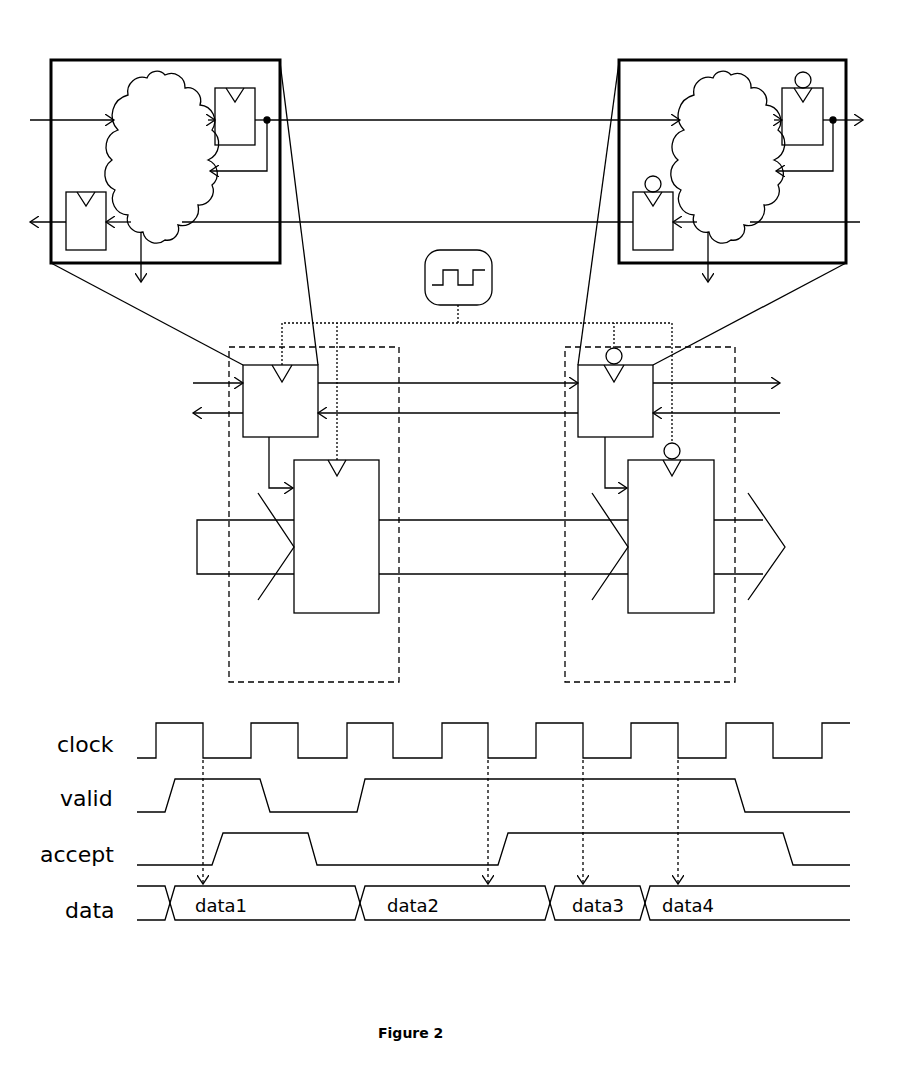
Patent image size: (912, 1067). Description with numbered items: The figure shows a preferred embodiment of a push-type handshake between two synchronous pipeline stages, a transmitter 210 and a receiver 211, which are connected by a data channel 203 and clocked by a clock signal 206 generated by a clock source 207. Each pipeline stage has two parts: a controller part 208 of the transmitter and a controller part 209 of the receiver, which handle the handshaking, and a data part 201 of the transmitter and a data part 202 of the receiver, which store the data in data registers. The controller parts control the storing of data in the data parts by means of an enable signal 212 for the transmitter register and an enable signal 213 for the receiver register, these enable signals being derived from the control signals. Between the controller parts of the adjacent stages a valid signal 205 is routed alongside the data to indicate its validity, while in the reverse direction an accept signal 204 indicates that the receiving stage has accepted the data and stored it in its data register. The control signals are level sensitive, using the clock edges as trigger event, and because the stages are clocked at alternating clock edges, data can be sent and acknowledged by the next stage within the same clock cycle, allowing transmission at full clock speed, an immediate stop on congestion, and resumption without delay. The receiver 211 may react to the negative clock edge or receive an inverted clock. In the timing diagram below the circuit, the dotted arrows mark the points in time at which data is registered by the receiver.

The data part of the transmitter 201 is at (317, 605).
The data part of the receiver 202 is at (688, 605).
The data channel 203 is at (436, 563).
The accept signal 204 is at (525, 412).
The valid signal 205 is at (517, 380).
The clock signal 206 is at (364, 320).
The clock source 207 is at (493, 270).
The controller part of the transmitter 208 is at (213, 57).
The controller part of the receiver 209 is at (692, 57).
The transmitter 210 is at (229, 662).
The receiver 211 is at (735, 650).
The enable signal 212 is at (268, 462).
The enable signal 213 is at (602, 470).